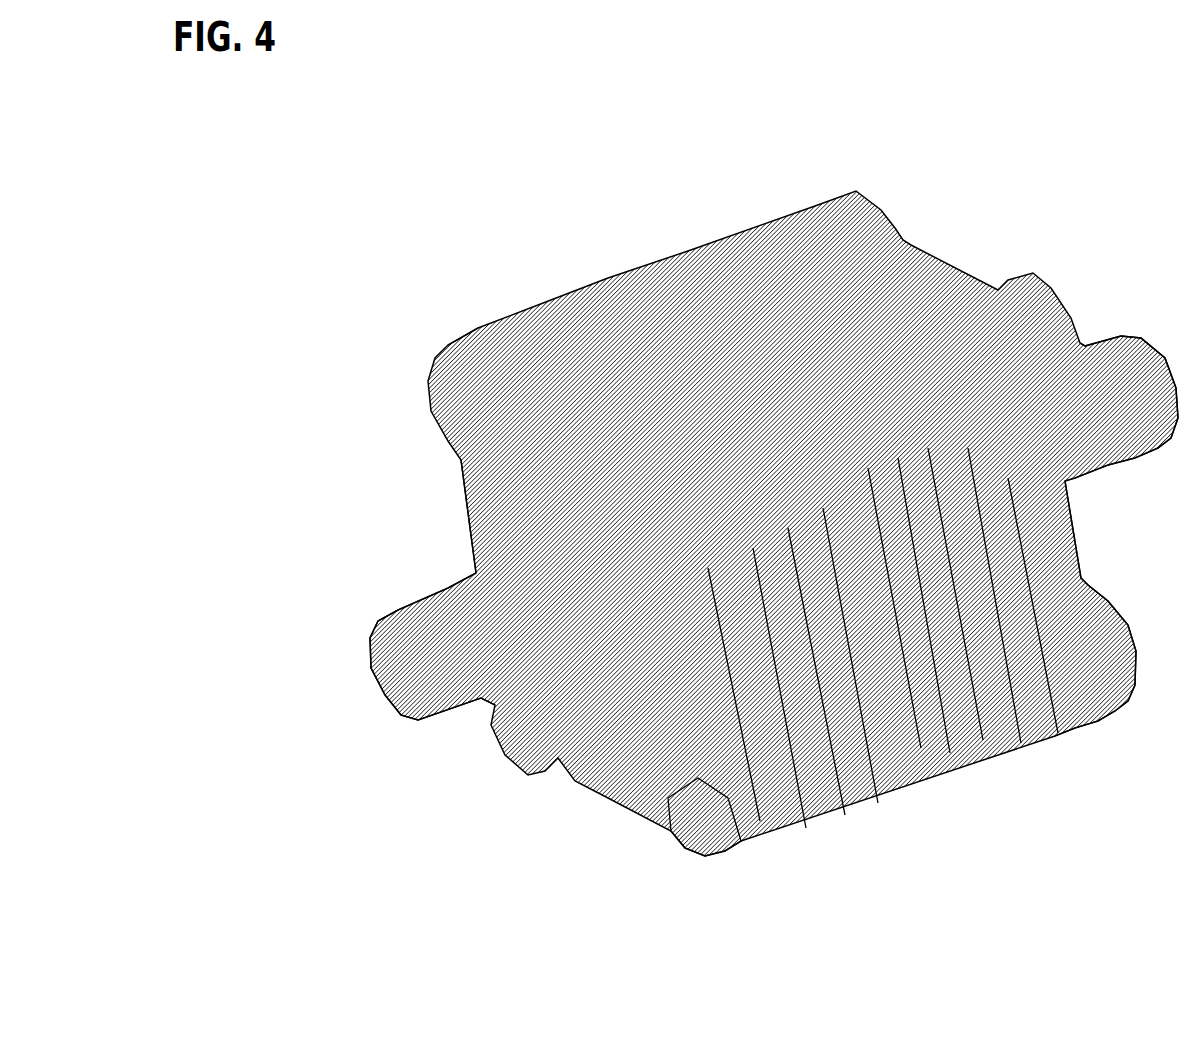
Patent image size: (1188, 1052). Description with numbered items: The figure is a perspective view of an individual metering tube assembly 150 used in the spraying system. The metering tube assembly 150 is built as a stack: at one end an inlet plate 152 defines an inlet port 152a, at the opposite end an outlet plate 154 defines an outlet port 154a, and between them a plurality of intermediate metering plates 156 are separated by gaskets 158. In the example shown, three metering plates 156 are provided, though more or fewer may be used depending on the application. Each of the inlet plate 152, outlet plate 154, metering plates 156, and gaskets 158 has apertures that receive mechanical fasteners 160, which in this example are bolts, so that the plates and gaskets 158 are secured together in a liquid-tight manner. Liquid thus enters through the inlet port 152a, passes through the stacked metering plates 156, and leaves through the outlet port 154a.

The metering tube assembly 150 is at (472, 213).
The inlet plate 152 is at (752, 813).
The inlet port 152a is at (393, 670).
The outlet plate 154 is at (1050, 725).
The outlet port 154a is at (1160, 435).
The metering plates 156 is at (837, 807).
The gaskets 158 is at (798, 820).
The mechanical fasteners 160 is at (675, 840).